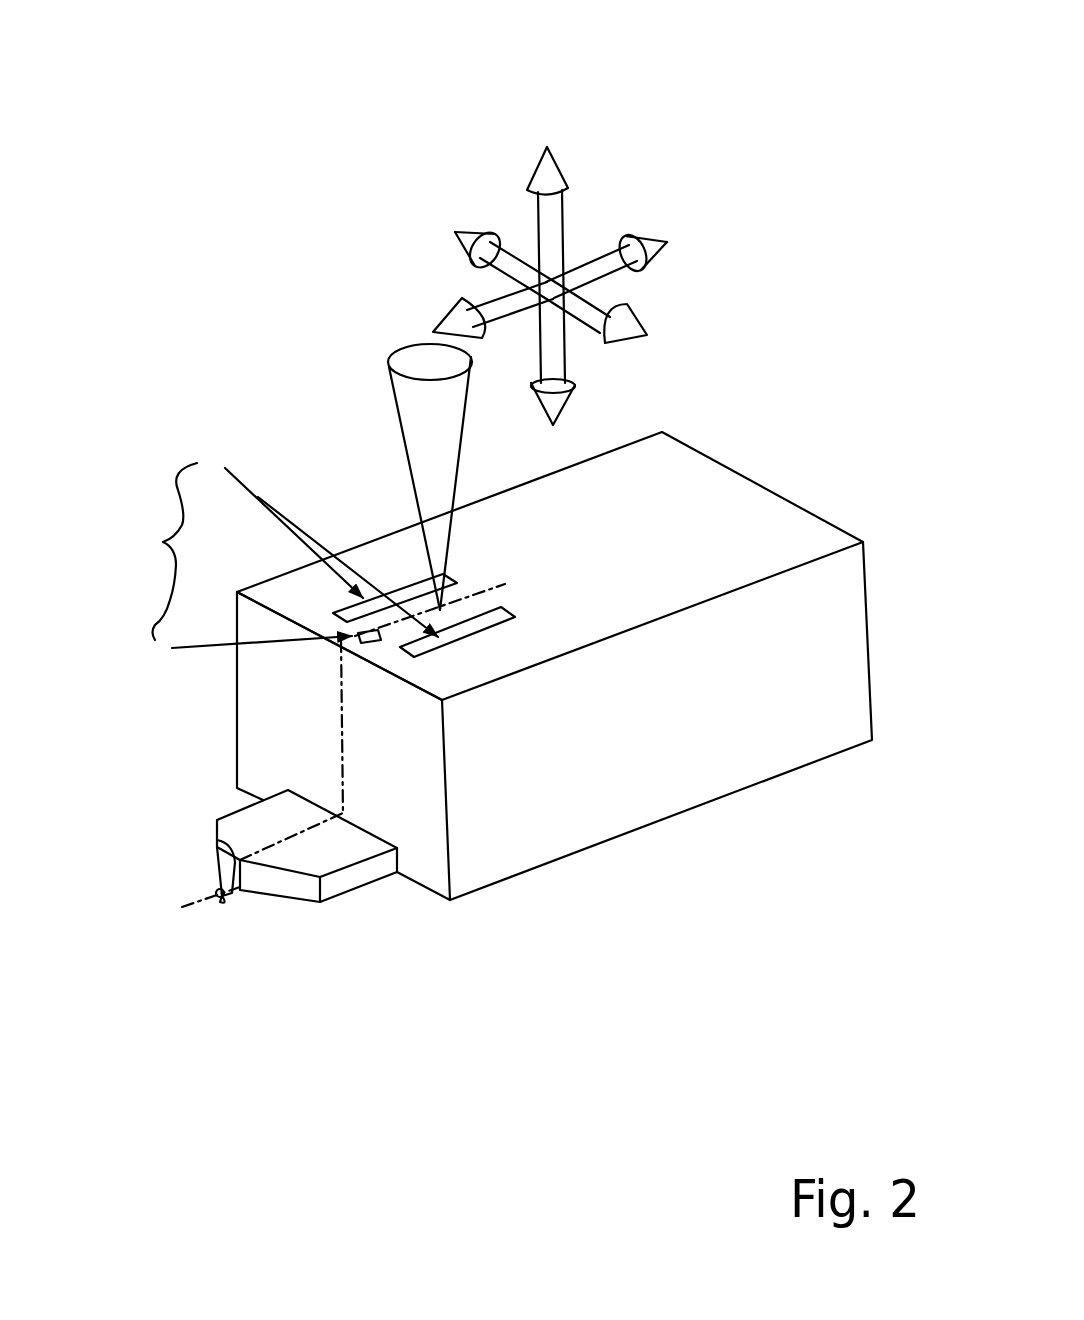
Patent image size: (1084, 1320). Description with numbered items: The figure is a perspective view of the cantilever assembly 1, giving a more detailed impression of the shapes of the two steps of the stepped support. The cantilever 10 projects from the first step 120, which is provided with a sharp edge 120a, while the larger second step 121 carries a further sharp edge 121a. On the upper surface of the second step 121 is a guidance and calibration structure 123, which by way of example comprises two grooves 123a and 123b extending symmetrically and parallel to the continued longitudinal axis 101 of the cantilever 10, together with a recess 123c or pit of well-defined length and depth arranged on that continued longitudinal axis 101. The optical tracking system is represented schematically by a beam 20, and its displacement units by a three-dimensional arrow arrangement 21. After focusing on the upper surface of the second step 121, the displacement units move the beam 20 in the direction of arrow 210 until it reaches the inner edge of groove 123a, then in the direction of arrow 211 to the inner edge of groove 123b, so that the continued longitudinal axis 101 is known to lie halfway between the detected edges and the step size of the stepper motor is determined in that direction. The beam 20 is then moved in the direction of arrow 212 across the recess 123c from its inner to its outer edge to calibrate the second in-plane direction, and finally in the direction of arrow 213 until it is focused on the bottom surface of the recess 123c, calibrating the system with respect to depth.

The cantilever assembly 1 is at (562, 700).
The cantilever 10 is at (229, 912).
The beam 20 is at (438, 540).
The three-dimensional arrow arrangement 21 is at (541, 226).
The arrow 210 is at (507, 240).
The arrow 211 is at (600, 303).
The arrow 212 is at (480, 303).
The arrow 213 is at (562, 363).
The continued longitudinal axis 101 is at (478, 600).
The first step 120 is at (245, 827).
The sharp edge 120a is at (215, 840).
The second step 121 is at (726, 537).
The further sharp edge 121a is at (433, 687).
The guidance and calibration structure 123 is at (307, 586).
The groove 123a is at (275, 517).
The groove 123b is at (310, 523).
The recess 123c is at (207, 650).